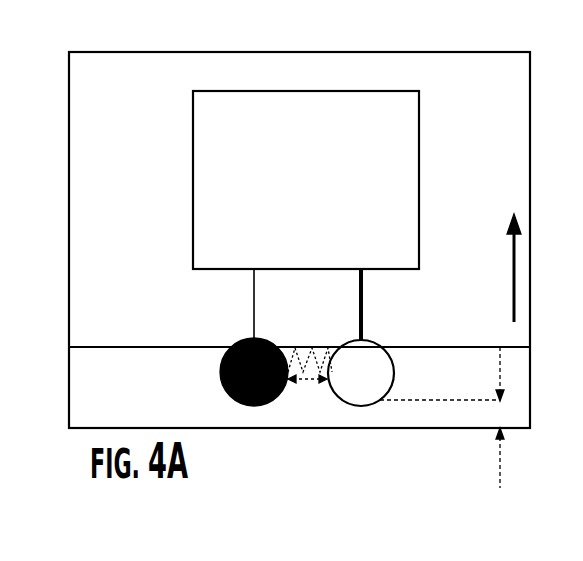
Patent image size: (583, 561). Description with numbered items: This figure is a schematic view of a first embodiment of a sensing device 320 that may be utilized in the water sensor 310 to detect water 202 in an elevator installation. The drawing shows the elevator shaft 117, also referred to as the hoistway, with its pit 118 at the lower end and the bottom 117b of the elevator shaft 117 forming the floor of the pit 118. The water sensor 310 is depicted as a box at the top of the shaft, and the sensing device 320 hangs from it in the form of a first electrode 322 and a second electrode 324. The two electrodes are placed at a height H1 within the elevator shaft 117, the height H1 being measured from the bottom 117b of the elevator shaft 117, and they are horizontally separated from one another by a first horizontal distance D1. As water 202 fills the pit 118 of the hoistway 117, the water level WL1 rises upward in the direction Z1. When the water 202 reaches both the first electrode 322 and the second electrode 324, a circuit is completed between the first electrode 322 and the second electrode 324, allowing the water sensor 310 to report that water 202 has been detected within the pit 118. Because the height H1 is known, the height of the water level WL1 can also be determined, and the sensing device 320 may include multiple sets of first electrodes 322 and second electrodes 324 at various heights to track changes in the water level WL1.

The elevator shaft 117 is at (505, 160).
The bottom of the elevator shaft 117b is at (425, 429).
The pit 118 is at (117, 233).
The water 202 is at (118, 385).
The water sensor 310 is at (415, 243).
The sensing device 320 is at (165, 338).
The first electrode 322 is at (221, 363).
The second electrode 324 is at (389, 359).
The water level WL1 is at (430, 346).
The first horizontal distance D1 is at (303, 384).
The upward direction Z1 is at (514, 287).
The height H1 is at (503, 455).